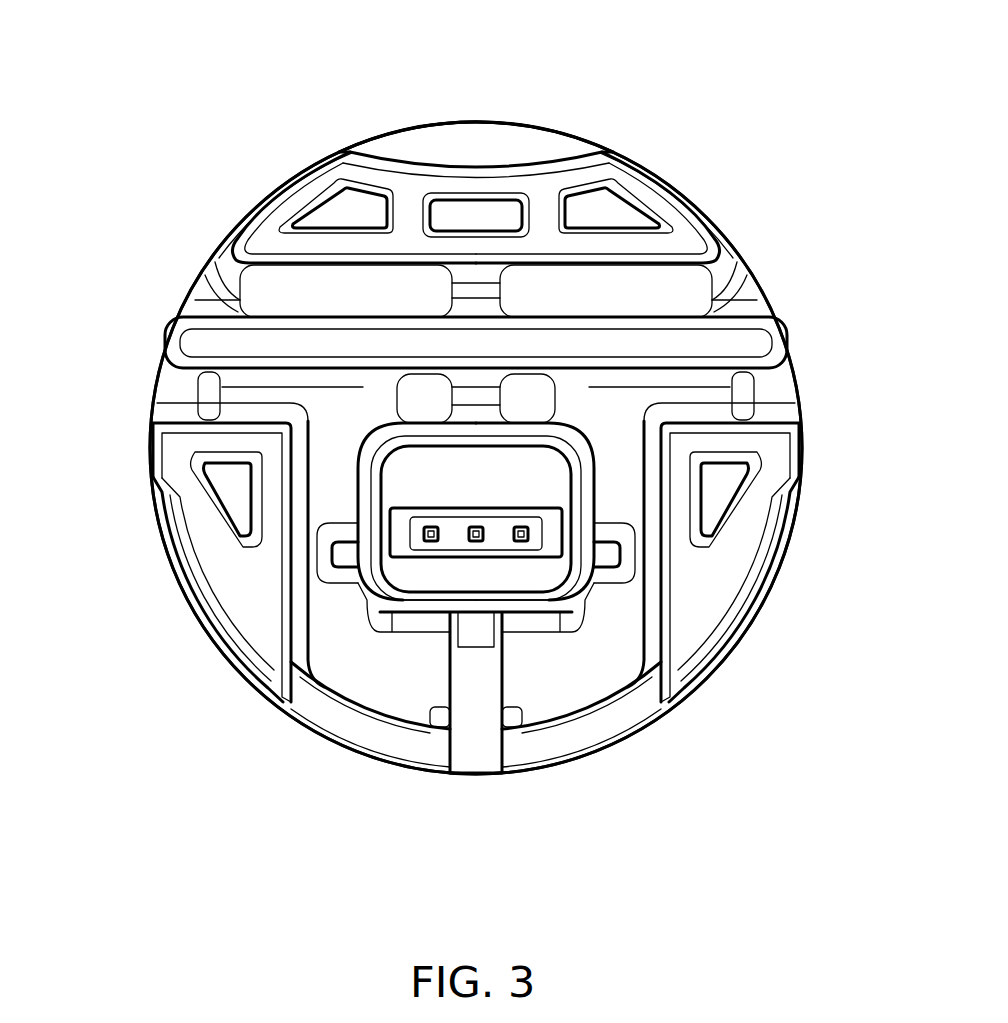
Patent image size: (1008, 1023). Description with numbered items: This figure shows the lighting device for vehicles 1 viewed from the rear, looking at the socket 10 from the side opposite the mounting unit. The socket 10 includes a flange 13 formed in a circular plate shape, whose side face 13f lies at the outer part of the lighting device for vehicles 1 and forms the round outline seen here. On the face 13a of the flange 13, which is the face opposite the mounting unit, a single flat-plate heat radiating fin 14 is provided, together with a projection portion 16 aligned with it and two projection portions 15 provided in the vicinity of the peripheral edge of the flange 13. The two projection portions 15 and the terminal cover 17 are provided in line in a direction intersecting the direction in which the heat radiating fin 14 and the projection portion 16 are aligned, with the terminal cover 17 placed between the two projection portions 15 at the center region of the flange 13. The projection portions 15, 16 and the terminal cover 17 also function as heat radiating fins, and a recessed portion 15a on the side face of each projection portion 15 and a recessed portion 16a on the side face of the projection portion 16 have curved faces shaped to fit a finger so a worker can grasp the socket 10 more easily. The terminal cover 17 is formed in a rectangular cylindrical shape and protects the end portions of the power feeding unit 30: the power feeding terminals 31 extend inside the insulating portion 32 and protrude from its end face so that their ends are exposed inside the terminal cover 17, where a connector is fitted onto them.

The lighting device for vehicles 1 is at (753, 106).
The socket 10 is at (152, 581).
The flange 13 is at (483, 82).
The face of the flange 13a is at (493, 147).
The side face of the flange 13f is at (453, 108).
The heat radiating fin 14 is at (755, 343).
The projection portion 15 is at (265, 623).
The recessed portion 15a is at (217, 599).
The projection portion 16 is at (575, 177).
The recessed portion 16a is at (414, 151).
The terminal cover 17 is at (548, 607).
The power feeding unit 30 is at (512, 838).
The power feeding terminal 31 is at (477, 545).
The insulating portion 32 is at (455, 545).